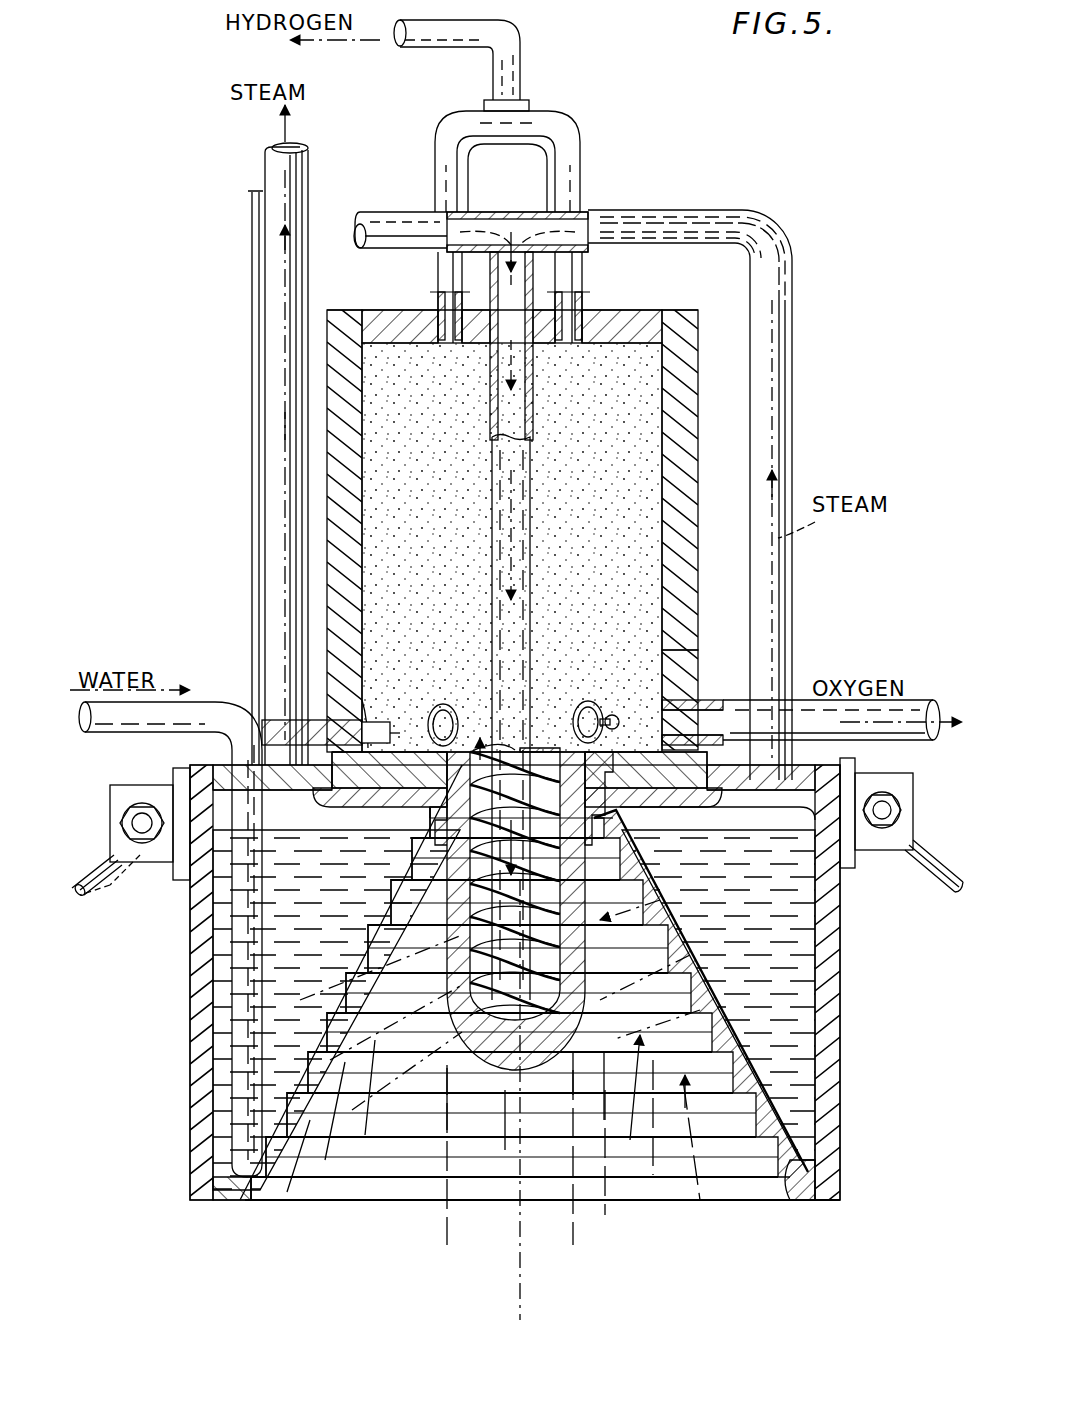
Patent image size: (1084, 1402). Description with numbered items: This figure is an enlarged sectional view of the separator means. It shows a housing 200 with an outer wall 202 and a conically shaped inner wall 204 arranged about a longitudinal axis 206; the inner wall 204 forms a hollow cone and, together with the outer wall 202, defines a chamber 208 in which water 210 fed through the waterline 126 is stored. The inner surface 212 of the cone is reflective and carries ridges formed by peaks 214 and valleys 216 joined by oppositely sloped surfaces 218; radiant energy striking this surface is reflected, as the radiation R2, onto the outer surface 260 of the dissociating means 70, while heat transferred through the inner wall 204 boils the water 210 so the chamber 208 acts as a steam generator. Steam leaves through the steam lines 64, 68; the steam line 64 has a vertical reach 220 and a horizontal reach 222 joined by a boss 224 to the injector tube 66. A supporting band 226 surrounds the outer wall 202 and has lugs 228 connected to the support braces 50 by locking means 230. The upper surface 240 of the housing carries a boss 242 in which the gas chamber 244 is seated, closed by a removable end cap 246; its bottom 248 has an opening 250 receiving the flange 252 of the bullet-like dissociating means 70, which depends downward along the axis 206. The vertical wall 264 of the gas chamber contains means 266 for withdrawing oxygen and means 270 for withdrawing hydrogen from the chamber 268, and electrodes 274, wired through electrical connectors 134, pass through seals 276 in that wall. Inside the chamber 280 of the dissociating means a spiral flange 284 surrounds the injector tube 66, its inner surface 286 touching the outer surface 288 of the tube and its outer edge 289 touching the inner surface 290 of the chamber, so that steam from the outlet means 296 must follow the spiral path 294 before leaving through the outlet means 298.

The support braces 50 is at (940, 892).
The steam line 64 is at (800, 350).
The injector tube 66 is at (533, 372).
The steam line 68 is at (270, 296).
The dissociating means 70 is at (476, 1098).
The waterline 126 is at (112, 735).
The electrical connectors 134 is at (255, 502).
The housing 200 is at (182, 1082).
The outer wall 202 is at (196, 981).
The inner wall 204 is at (255, 1185).
The longitudinal axis 206 is at (520, 1278).
The chamber 208 is at (717, 815).
The water 210 is at (514, 1010).
The inner surface 212 is at (748, 1162).
The peaks 214 is at (762, 1170).
The valleys 216 is at (788, 1190).
The oppositely sloped surfaces 218 is at (790, 1138).
The vertical reach 220 is at (776, 415).
The horizontal reach 222 is at (648, 215).
The boss 224 is at (545, 283).
The supporting band 226 is at (848, 870).
The lugs 228 is at (905, 782).
The locking means 230 is at (896, 808).
The upper surface 240 is at (212, 765).
The boss 242 is at (722, 796).
The gas chamber 244 is at (700, 672).
The removable end cap 246 is at (637, 310).
The bottom 248 is at (692, 722).
The opening 250 is at (412, 762).
The flange 252 is at (603, 760).
The outer surface 260 is at (578, 1035).
The vertical wall 264 is at (680, 400).
The means for withdrawing oxygen 266 is at (440, 704).
The chamber 268 is at (512, 547).
The means for withdrawing hydrogen 270 is at (452, 345).
The electrodes 274 is at (392, 748).
The seals 276 is at (366, 700).
The chamber 280 is at (524, 911).
The spiral flange 284 is at (548, 745).
The inner surface 286 is at (520, 745).
The outer surface 288 is at (530, 507).
The outer edge 289 is at (468, 932).
The inner surface 290 is at (640, 860).
The spiral path 294 is at (462, 790).
The outlet means 296 is at (478, 1036).
The outlet means 298 is at (478, 748).
The reflected radiation R2 is at (678, 1078).